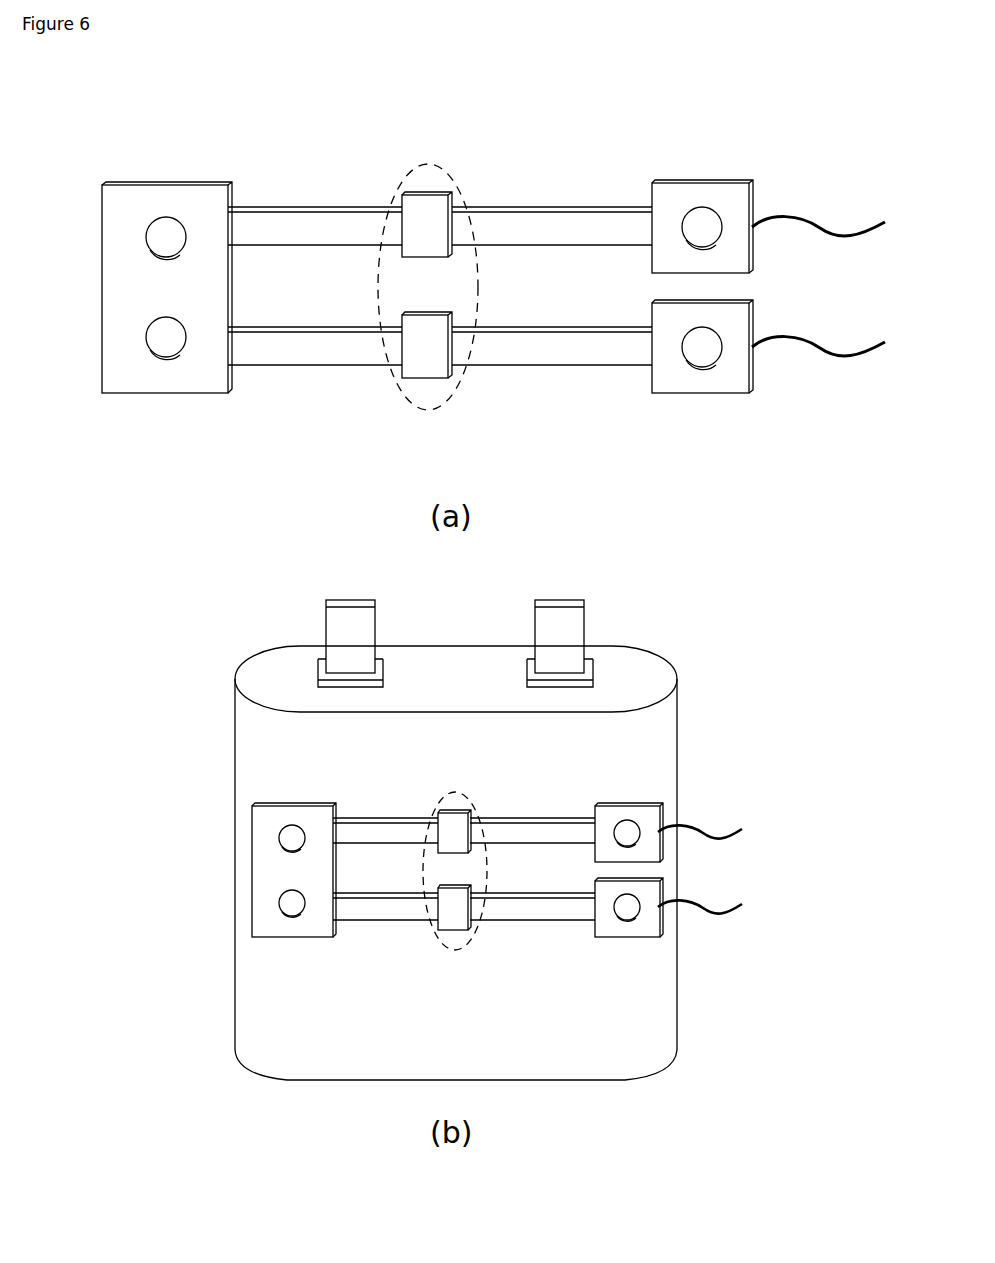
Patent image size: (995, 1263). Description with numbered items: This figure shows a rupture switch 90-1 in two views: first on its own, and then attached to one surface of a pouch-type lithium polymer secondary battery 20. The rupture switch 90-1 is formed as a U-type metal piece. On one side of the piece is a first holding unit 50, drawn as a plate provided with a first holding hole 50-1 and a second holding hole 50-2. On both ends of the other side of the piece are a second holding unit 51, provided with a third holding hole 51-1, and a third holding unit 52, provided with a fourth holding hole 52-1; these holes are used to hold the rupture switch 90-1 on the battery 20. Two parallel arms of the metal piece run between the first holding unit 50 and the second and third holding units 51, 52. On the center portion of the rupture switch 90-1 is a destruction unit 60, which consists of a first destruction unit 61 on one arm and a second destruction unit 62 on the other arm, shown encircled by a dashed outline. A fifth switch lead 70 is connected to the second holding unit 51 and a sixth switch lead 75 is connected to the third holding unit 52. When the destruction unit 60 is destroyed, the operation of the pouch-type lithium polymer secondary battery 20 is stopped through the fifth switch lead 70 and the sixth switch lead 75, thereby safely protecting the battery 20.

The rupture switch 90-1 is at (90, 160).
The first holding unit 50 is at (125, 190).
The first holding hole 50-1 is at (172, 228).
The second holding hole 50-2 is at (172, 352).
The destruction unit 60 is at (405, 182).
The first destruction unit 61 is at (438, 200).
The second destruction unit 62 is at (442, 392).
The second holding unit 51 is at (677, 193).
The third holding hole 51-1 is at (713, 212).
The third holding unit 52 is at (735, 385).
The fourth holding hole 52-1 is at (690, 360).
The fifth switch lead 70 is at (820, 226).
The sixth switch lead 75 is at (820, 345).
The pouch-type lithium polymer secondary battery 20 is at (645, 670).